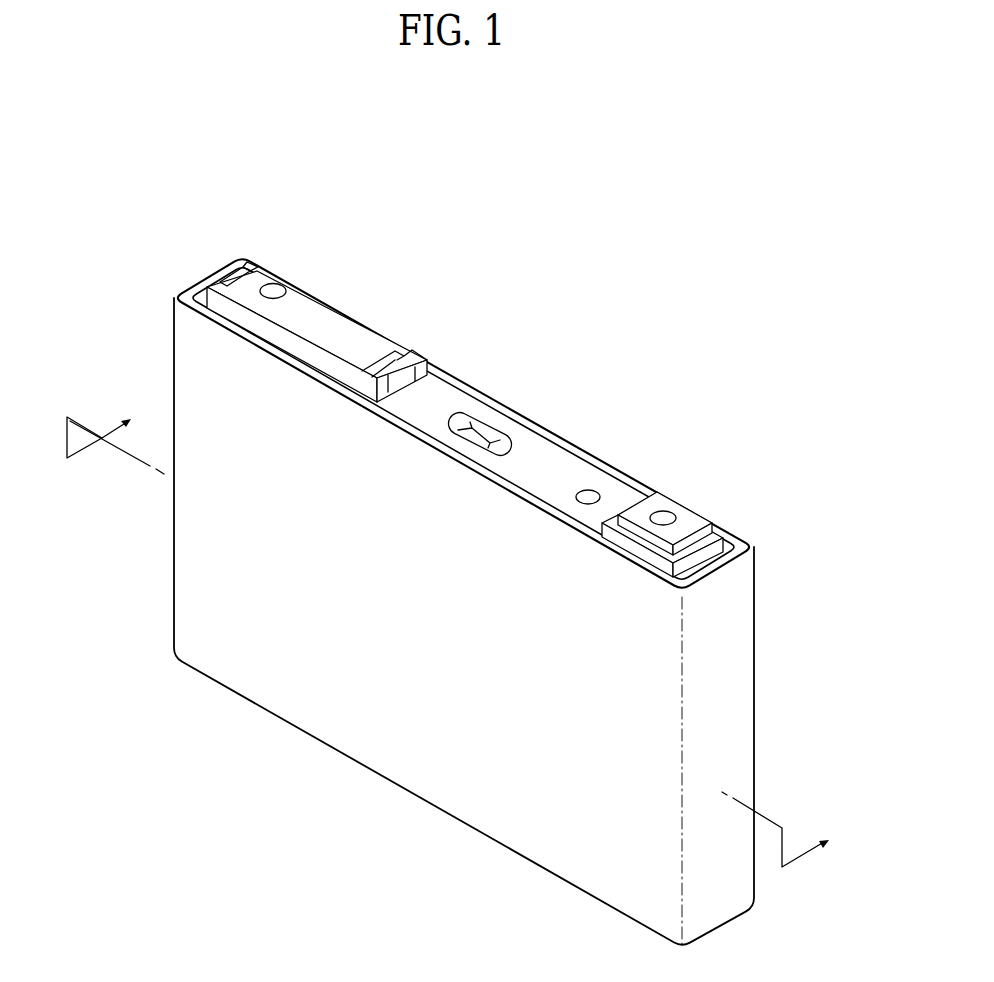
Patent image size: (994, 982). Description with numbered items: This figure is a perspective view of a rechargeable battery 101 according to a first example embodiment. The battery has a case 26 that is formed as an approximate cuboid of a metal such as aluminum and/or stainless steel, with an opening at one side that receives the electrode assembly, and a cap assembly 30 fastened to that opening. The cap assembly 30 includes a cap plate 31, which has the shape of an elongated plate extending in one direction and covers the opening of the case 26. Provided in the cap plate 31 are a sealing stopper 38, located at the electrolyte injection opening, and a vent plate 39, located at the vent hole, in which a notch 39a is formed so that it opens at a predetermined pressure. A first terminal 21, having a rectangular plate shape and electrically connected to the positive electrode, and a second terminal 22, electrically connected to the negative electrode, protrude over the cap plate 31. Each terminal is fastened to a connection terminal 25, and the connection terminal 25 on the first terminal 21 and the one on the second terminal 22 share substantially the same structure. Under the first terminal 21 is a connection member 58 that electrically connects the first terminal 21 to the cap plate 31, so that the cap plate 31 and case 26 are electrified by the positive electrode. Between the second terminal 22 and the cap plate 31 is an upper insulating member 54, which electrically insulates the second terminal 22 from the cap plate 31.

The rechargeable battery 101 is at (578, 290).
The first terminal 21 is at (692, 520).
The second terminal 22 is at (317, 306).
The connection terminal 25 is at (275, 287).
The case 26 is at (408, 762).
The cap assembly 30 is at (571, 430).
The cap plate 31 is at (440, 393).
The sealing stopper 38 is at (590, 490).
The vent plate 39 is at (478, 415).
The notch 39a is at (492, 440).
The upper insulating member 54 is at (386, 330).
The connection member 58 is at (718, 520).